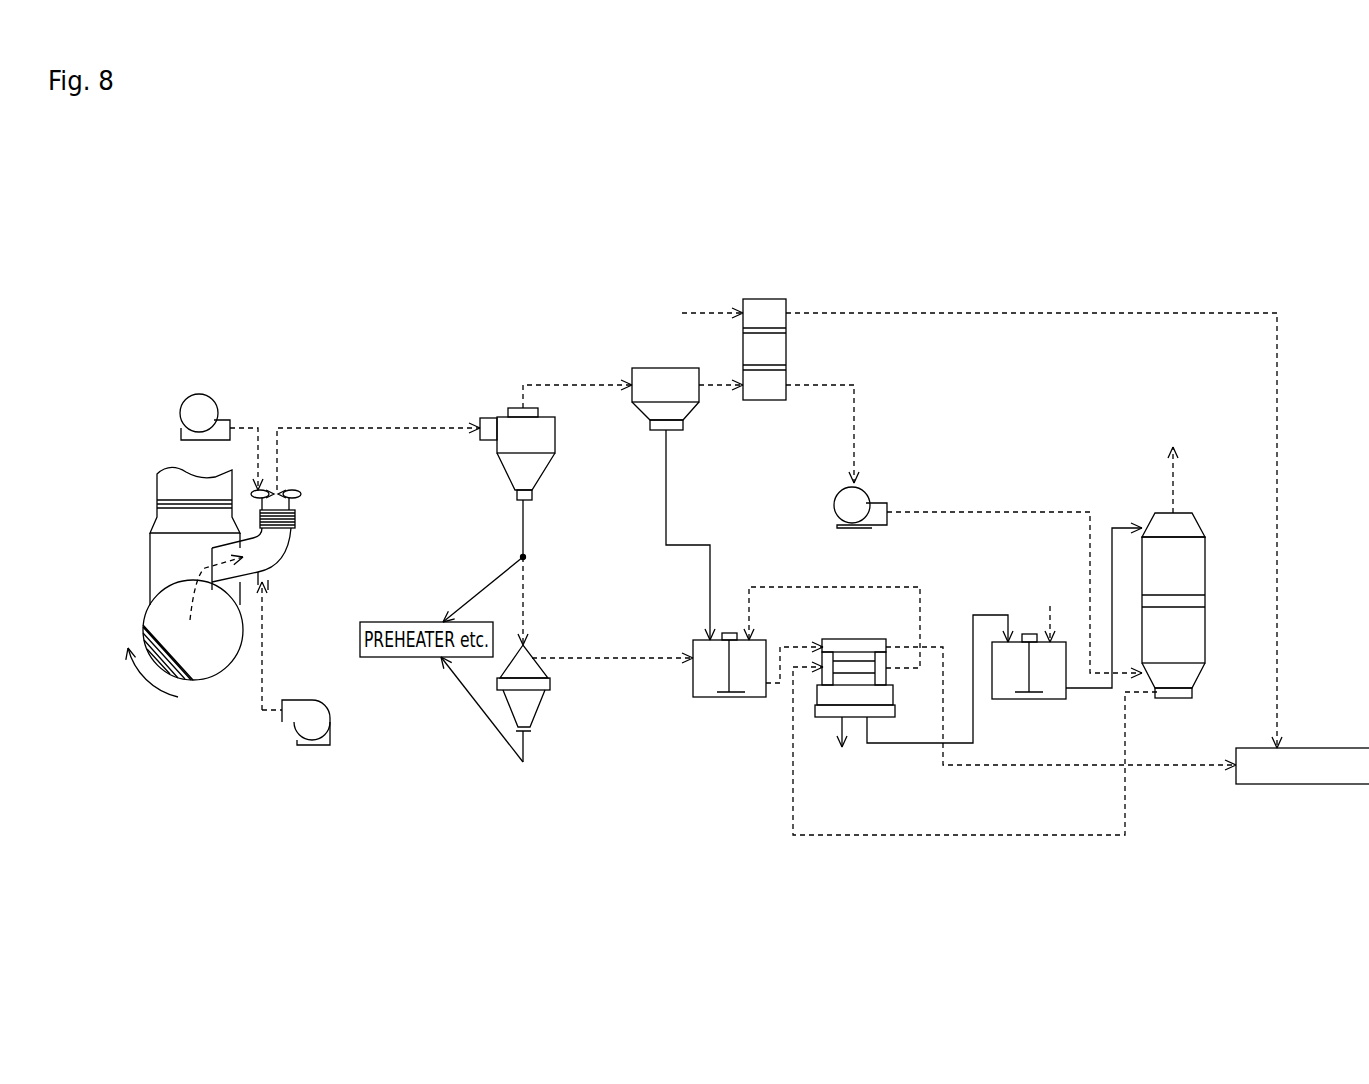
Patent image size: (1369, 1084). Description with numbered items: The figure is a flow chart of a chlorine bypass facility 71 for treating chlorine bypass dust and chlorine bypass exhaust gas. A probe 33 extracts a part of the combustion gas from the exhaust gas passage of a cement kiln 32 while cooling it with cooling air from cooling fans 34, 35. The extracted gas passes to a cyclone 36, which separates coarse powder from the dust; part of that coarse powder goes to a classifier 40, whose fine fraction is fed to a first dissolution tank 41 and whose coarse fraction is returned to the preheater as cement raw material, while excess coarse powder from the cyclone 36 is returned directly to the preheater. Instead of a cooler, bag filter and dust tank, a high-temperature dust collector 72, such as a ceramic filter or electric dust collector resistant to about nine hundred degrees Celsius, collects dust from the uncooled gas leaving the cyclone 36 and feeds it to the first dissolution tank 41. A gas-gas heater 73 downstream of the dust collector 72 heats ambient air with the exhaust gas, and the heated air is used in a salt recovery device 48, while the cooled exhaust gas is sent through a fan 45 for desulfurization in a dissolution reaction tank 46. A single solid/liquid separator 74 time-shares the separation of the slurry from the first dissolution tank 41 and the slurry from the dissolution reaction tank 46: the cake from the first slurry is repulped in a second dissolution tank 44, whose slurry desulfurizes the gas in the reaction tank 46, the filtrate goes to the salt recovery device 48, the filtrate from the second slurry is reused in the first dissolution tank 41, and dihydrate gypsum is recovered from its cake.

The chlorine bypass facility 71 is at (757, 224).
The cement kiln 32 is at (203, 680).
The probe 33 is at (275, 557).
The cooling fan 34 is at (318, 745).
The cooling fan 35 is at (206, 396).
The cyclone 36 is at (503, 470).
The classifier 40 is at (538, 707).
The first dissolution tank 41 is at (718, 697).
The second dissolution tank 44 is at (1007, 699).
The fan 45 is at (835, 505).
The dissolution reaction tank 46 is at (1205, 566).
The salt recovery device 48 is at (1273, 784).
The high-temperature dust collector 72 is at (668, 368).
The gas-gas heater 73 is at (770, 299).
The solid/liquid separator 74 is at (852, 639).